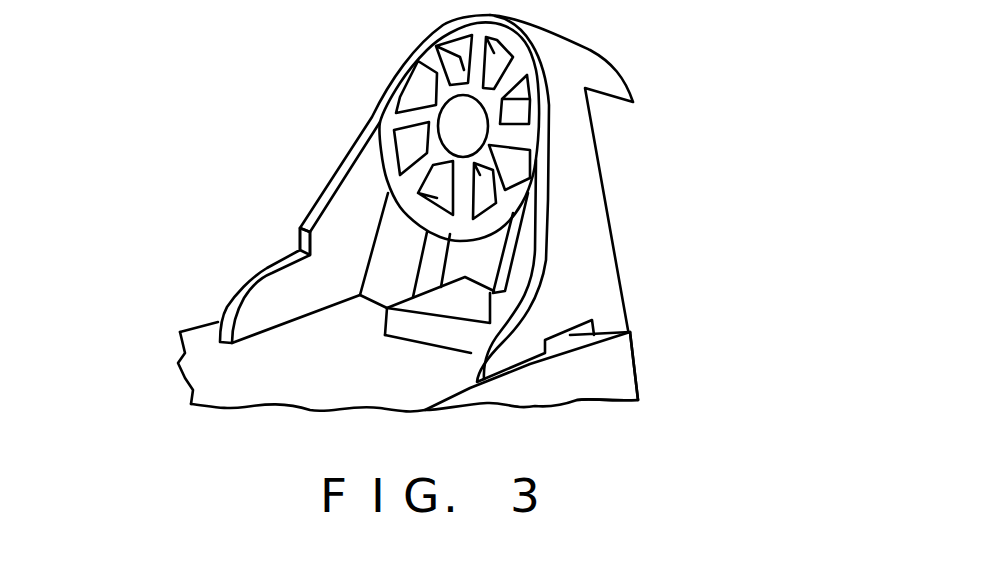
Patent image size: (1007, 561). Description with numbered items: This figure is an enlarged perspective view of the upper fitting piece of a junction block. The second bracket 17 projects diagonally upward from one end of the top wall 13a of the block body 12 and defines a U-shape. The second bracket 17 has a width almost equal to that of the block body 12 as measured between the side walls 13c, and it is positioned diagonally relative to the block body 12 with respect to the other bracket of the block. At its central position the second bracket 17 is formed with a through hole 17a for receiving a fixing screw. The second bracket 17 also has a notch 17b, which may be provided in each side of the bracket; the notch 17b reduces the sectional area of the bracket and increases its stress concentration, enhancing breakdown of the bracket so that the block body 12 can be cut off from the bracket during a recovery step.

The block body 12 is at (428, 374).
The top wall 13a is at (183, 363).
The side walls 13c is at (615, 387).
The second bracket 17 is at (453, 198).
The through hole 17a is at (466, 127).
The notch 17b is at (298, 239).